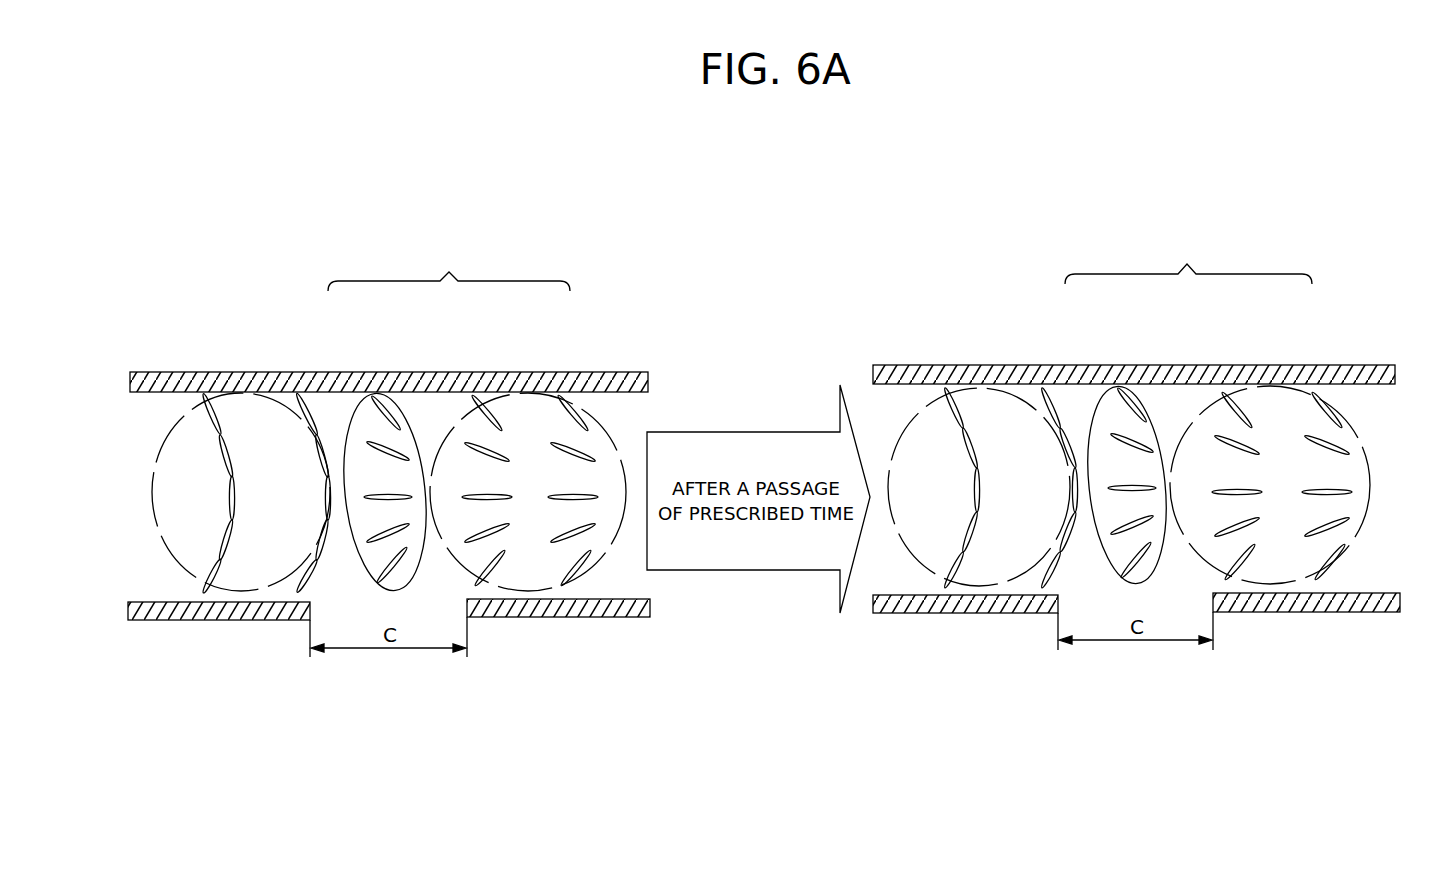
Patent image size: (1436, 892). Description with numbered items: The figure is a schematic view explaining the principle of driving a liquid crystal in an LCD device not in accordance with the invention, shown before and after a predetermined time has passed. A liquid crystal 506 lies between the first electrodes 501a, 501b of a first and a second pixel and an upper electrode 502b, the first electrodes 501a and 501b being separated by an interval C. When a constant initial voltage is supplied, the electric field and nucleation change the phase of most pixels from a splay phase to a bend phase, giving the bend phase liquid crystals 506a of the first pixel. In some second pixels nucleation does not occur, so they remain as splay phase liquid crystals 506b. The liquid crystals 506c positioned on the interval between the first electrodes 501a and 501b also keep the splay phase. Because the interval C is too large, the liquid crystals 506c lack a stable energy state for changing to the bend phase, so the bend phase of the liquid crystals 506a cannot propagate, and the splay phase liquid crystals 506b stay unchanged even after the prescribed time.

The upper substrate 502b is at (230, 385).
The first electrode 501a is at (245, 612).
The first electrode 501b is at (570, 612).
The liquid crystal 506 is at (820, 264).
The bend phase liquid crystals 506a is at (336, 392).
The splay phase liquid crystals 506b is at (590, 400).
The liquid crystals on the interval 506c is at (415, 423).